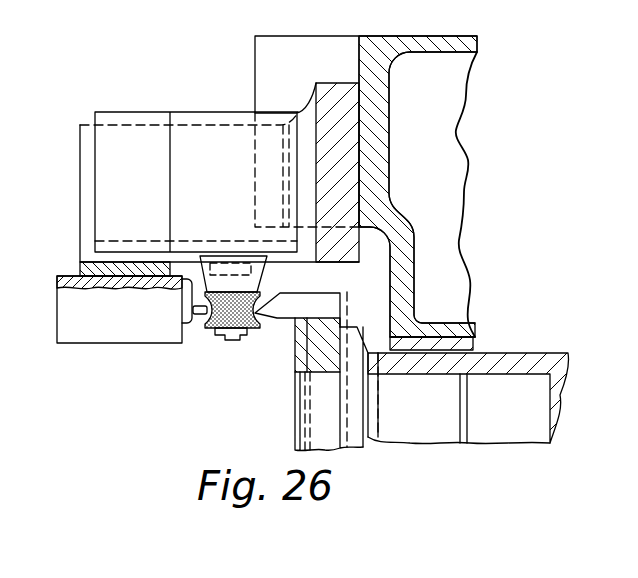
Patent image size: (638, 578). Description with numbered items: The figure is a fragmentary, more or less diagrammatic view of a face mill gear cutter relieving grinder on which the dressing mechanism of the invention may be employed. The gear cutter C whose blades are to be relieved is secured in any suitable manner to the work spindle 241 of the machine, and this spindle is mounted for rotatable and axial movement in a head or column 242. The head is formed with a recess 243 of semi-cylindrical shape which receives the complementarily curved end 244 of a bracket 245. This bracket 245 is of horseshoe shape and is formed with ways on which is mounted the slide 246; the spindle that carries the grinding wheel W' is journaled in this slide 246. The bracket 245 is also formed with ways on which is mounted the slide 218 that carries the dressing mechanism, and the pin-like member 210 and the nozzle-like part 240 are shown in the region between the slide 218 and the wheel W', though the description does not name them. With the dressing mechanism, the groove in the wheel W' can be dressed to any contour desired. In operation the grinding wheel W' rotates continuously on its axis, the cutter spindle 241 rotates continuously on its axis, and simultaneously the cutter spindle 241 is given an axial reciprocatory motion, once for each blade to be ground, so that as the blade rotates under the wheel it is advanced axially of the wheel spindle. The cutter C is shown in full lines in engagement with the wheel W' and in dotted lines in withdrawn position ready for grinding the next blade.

The pin / drive member 210 is at (200, 322).
The slide 218 is at (107, 338).
The nozzle 240 is at (315, 298).
The work spindle 241 is at (550, 396).
The head or column 242 is at (453, 262).
The recess 243 is at (308, 46).
The curved end 244 is at (328, 90).
The bracket 245 is at (83, 133).
The slide 246 is at (138, 120).
The grinding wheel W' is at (229, 339).
The gear cutter C is at (300, 358).